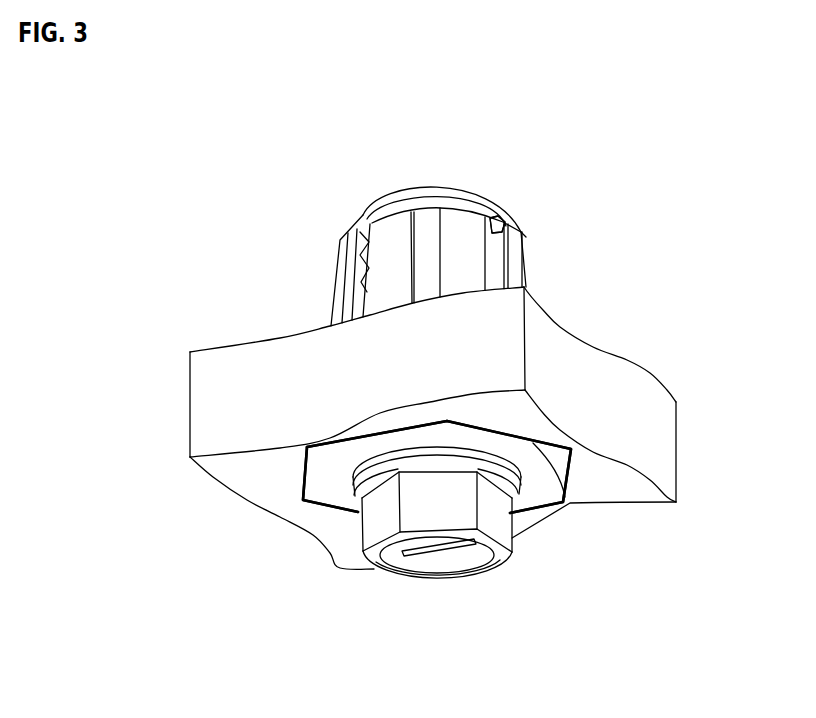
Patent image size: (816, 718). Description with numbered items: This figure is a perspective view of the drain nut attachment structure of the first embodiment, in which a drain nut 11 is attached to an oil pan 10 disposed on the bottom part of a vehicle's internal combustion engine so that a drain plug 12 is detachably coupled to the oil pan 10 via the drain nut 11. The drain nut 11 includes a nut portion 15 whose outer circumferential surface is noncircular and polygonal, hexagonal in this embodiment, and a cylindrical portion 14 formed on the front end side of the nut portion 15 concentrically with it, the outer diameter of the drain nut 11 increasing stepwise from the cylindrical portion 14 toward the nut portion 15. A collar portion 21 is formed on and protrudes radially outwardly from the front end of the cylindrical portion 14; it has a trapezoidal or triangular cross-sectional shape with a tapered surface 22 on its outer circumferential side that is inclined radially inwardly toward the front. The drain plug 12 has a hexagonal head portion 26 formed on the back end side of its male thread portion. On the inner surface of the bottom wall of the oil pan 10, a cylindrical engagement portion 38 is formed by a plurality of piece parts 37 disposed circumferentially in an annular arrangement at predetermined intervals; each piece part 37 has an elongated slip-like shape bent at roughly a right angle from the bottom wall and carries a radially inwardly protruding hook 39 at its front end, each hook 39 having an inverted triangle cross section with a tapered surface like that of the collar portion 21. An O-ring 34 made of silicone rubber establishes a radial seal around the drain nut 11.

The oil pan 10 is at (248, 485).
The drain nut 11 is at (540, 500).
The drain plug 12 is at (444, 524).
The cylindrical portion 14 is at (427, 248).
The nut portion 15 is at (330, 487).
The collar portion 21 is at (473, 190).
The tapered surface 22 is at (430, 187).
The head portion 26 is at (492, 535).
The O-ring 34 is at (568, 500).
The piece parts 37 is at (470, 238).
The cylindrical engagement portion 38 is at (517, 260).
The hooks 39 is at (371, 227).